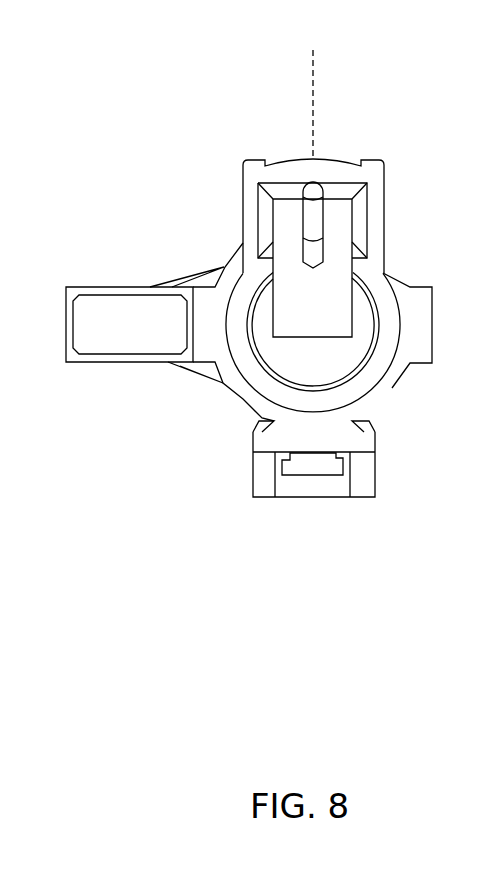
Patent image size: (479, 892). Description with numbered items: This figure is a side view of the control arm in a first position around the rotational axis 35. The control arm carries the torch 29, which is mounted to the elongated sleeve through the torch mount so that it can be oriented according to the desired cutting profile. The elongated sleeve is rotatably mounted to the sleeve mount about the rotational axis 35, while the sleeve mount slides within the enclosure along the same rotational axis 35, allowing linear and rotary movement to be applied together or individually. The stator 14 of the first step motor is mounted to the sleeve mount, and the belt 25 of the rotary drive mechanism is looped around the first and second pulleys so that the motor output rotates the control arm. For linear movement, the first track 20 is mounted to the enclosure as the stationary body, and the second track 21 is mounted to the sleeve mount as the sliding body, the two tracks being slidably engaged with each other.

The stator 14 is at (100, 362).
The first track 20 is at (333, 490).
The second track 21 is at (285, 463).
The belt 25 is at (180, 368).
The torch 29 is at (313, 268).
The rotational axis 35 is at (315, 320).